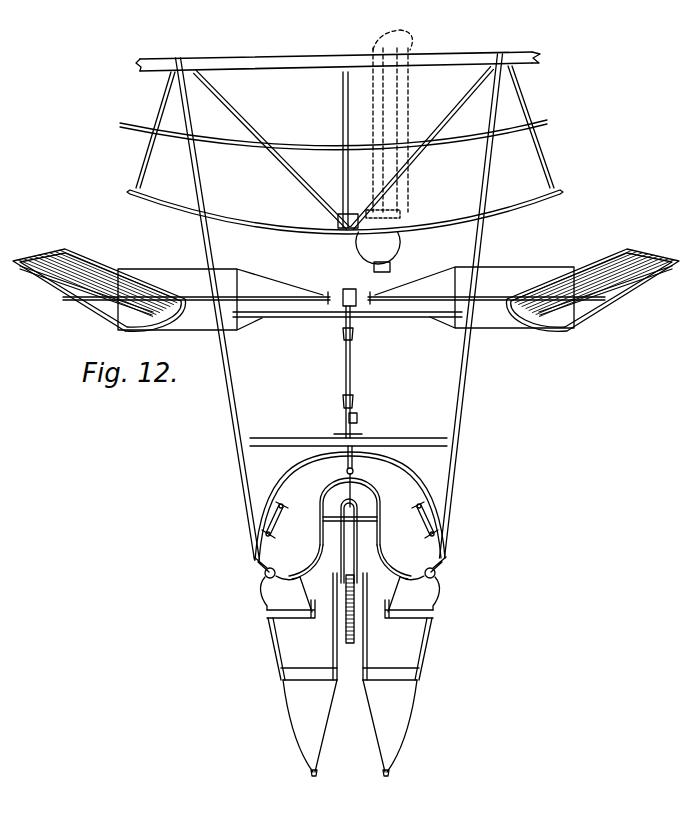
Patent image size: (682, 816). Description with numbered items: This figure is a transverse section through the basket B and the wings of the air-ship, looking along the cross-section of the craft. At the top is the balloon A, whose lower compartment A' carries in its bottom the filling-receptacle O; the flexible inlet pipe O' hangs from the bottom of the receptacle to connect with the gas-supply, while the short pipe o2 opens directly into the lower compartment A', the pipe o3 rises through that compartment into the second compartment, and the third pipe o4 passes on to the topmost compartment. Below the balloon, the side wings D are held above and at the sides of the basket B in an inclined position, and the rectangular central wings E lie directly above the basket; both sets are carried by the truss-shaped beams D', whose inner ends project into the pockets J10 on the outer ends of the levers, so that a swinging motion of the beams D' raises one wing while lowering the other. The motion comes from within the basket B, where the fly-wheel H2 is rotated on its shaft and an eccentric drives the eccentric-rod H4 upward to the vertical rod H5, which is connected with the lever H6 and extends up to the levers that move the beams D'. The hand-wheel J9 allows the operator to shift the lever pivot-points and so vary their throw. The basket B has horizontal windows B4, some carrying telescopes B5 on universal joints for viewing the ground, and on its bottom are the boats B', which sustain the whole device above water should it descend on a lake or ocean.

The balloon A is at (340, 74).
The lower compartment A' is at (341, 177).
The short pipe o2 is at (352, 222).
The pipe o3 is at (378, 118).
The third pipe o4 is at (405, 113).
The filling-receptacle O is at (397, 248).
The flexible inlet pipe O' is at (392, 269).
The side wings D is at (346, 283).
The beams D' is at (346, 293).
The central wings E is at (334, 292).
The pocket J10 is at (350, 289).
The rod H5 is at (352, 375).
The lever H6 is at (357, 417).
The eccentric-rod H4 is at (378, 487).
The hand-wheel J9 is at (262, 522).
The telescopes B5 is at (275, 571).
The horizontal windows B4 is at (262, 566).
The fly-wheel H2 is at (346, 632).
The basket B is at (356, 626).
The boats B' is at (350, 728).